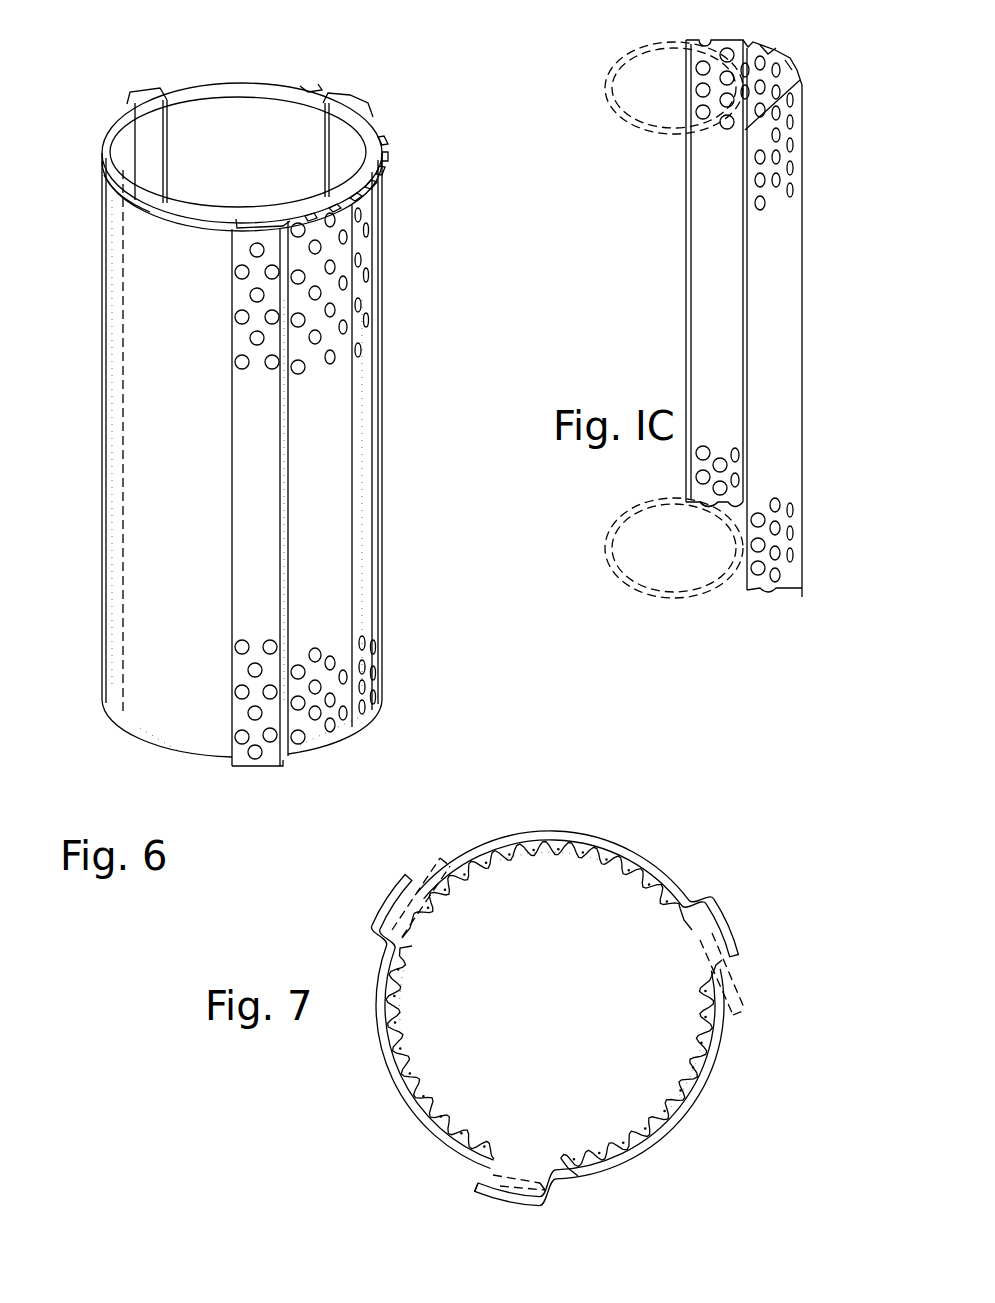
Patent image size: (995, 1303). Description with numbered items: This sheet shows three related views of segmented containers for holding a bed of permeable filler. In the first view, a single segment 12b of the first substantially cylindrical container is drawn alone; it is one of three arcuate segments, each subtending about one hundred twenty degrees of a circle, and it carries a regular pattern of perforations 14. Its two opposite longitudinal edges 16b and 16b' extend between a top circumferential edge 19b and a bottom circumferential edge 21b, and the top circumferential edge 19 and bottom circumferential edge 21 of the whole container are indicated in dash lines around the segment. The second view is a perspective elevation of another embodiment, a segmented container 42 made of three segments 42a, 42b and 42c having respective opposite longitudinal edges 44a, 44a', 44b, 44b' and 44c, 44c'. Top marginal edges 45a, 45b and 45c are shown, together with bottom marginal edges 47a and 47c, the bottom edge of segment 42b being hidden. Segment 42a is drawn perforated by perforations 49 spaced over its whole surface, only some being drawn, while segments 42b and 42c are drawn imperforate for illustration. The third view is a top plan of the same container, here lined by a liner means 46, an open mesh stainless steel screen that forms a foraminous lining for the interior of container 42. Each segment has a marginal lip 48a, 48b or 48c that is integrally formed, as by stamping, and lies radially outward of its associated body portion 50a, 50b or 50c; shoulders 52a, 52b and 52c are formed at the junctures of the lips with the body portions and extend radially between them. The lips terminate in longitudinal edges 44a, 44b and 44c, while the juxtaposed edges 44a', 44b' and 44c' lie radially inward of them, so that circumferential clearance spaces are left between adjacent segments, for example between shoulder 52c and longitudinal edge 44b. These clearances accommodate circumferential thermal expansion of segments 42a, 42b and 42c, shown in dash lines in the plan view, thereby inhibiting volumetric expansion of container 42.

In FIG. 1C, the segment 12b is at (668, 340).
In FIG. 1C, the perforations 14 is at (775, 580).
In FIG. 1C, the longitudinal edge 16b is at (676, 273).
In FIG. 1C, the longitudinal edge 16b' is at (748, 316).
In FIG. 1C, the top circumferential edge 19 is at (632, 62).
In FIG. 1C, the top circumferential edge 19b is at (776, 56).
In FIG. 1C, the bottom circumferential edge 21 is at (636, 520).
In FIG. 1C, the bottom circumferential edge 21b is at (718, 506).
In FIG. 6, the segmented container 42 is at (62, 481).
In FIG. 6, the segment 42a is at (348, 540).
In FIG. 7, the segment 42a is at (718, 1105).
In FIG. 6, the segment 42b is at (258, 118).
In FIG. 7, the segment 42b is at (568, 826).
In FIG. 6, the segment 42c is at (140, 590).
In FIG. 7, the segment 42c is at (390, 1114).
In FIG. 7, the longitudinal edge 44a is at (504, 1215).
In FIG. 7, the longitudinal edge 44a' is at (665, 992).
In FIG. 7, the longitudinal edge 44b is at (758, 974).
In FIG. 7, the longitudinal edge 44b' is at (459, 924).
In FIG. 7, the longitudinal edge 44c is at (397, 887).
In FIG. 7, the longitudinal edge 44c' is at (517, 1139).
In FIG. 6, the top marginal edge 45a is at (380, 160).
In FIG. 6, the top marginal edge 45b is at (303, 88).
In FIG. 6, the top marginal edge 45c is at (143, 200).
In FIG. 7, the liner means 46 is at (398, 1048).
In FIG. 6, the bottom marginal edge 47a is at (335, 745).
In FIG. 6, the bottom marginal edge 47c is at (178, 755).
In FIG. 6, the marginal lip 48a is at (258, 498).
In FIG. 7, the marginal lip 48a is at (558, 1203).
In FIG. 6, the marginal lip 48b is at (347, 103).
In FIG. 7, the marginal lip 48b is at (718, 905).
In FIG. 6, the marginal lip 48c is at (151, 127).
In FIG. 7, the marginal lip 48c is at (382, 915).
In FIG. 6, the perforations 49 is at (362, 272).
In FIG. 6, the body portion 50a is at (345, 430).
In FIG. 7, the body portion 50a is at (675, 1135).
In FIG. 7, the body portion 50b is at (612, 872).
In FIG. 6, the body portion 50c is at (165, 387).
In FIG. 7, the body portion 50c is at (385, 1042).
In FIG. 7, the shoulder 52a is at (578, 1175).
In FIG. 7, the shoulder 52b is at (683, 928).
In FIG. 7, the shoulder 52c is at (400, 948).